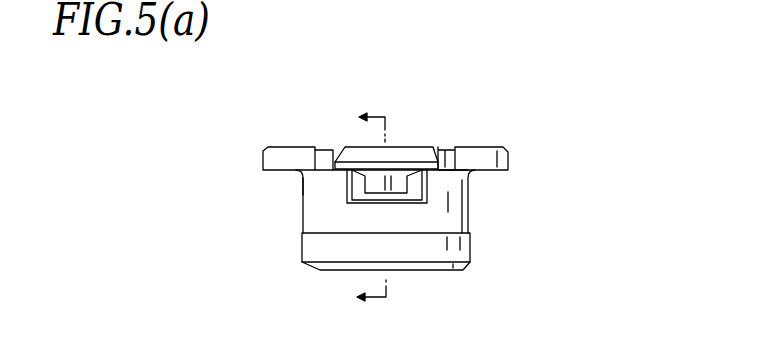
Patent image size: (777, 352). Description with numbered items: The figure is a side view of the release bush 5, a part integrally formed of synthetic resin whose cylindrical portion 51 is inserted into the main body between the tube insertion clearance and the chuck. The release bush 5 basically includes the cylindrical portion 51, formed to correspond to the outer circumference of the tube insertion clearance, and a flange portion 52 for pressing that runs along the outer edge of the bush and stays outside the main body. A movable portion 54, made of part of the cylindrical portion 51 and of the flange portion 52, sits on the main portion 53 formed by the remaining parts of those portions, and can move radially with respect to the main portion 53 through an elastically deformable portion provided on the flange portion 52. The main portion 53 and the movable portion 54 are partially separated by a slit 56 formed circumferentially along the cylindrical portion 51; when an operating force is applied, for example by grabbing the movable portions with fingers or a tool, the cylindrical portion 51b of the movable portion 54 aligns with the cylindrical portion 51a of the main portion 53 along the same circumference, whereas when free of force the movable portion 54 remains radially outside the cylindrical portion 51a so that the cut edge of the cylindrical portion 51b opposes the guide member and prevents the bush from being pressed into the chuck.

The release bush 5 is at (318, 118).
The cylindrical portion 51 is at (458, 205).
The cylindrical portion of the main portion 51a is at (357, 208).
The cylindrical portion of the movable portion 51b is at (400, 183).
The flange portion 52 is at (485, 147).
The main portion 53 is at (292, 208).
The movable portion 54 is at (410, 148).
The slit 56 is at (387, 198).